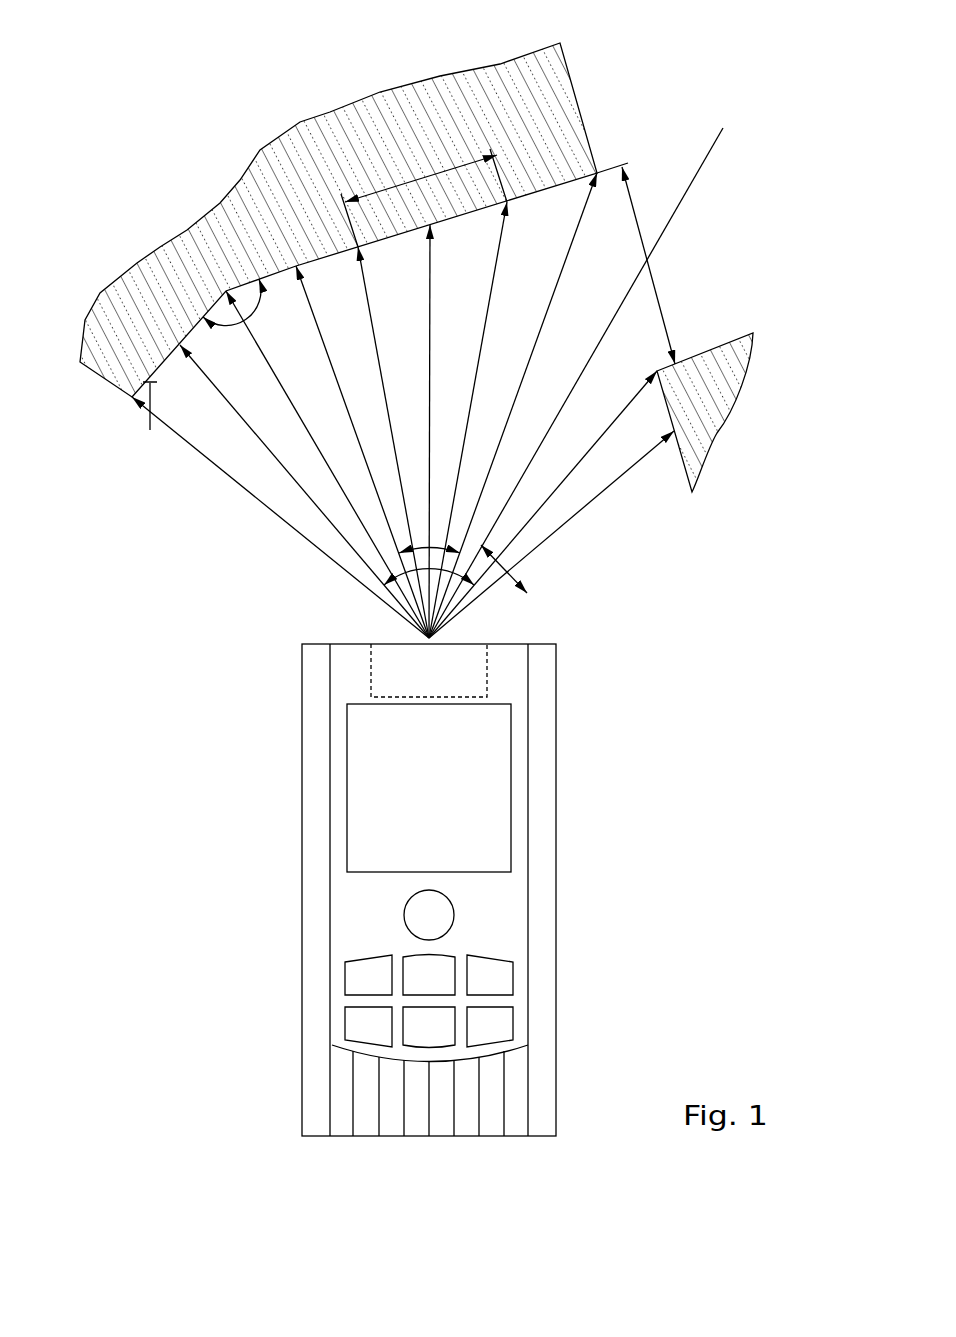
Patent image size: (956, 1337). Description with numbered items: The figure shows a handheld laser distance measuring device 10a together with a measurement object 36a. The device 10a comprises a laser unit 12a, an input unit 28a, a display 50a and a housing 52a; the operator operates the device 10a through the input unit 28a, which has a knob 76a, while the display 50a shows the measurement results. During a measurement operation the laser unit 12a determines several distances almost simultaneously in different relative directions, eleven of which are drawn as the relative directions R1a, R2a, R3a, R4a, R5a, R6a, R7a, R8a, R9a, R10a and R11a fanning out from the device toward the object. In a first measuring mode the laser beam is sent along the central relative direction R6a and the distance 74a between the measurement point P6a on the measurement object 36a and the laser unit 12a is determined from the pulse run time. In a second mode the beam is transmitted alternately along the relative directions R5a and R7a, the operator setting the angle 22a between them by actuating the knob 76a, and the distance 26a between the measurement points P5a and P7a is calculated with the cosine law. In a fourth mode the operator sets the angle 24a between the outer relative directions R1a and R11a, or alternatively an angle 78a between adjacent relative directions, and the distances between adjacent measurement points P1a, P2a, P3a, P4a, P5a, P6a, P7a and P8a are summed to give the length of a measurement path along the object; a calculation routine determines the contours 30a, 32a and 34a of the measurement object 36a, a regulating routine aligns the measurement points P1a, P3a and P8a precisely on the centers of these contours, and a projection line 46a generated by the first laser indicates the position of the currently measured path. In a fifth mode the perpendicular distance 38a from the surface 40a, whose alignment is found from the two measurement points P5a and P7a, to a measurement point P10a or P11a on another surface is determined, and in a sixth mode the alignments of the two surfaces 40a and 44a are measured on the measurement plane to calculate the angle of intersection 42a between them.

The handheld laser distance measuring device 10a is at (588, 662).
The laser unit 12a is at (374, 651).
The angle 22a is at (416, 548).
The angle 24a is at (388, 580).
The distance 26a is at (418, 180).
The input unit 28a is at (520, 1003).
The contour 30a is at (130, 404).
The contour 32a is at (207, 268).
The contour 34a is at (602, 167).
The measurement object 36a is at (546, 74).
The perpendicular distance 38a is at (647, 265).
The surface 40a is at (567, 188).
The angle of intersection 42a is at (208, 320).
The surface 44a is at (153, 422).
The projection line 46a is at (362, 246).
The display 50a is at (495, 772).
The housing 52a is at (517, 810).
The distance 74a is at (432, 332).
The knob 76a is at (443, 918).
The angle 78a is at (513, 566).
The relative direction R1a is at (199, 455).
The relative direction R2a is at (243, 420).
The relative direction R3a is at (281, 387).
The relative direction R4a is at (325, 350).
The relative direction R5a is at (375, 348).
The relative direction R6a is at (428, 338).
The relative direction R7a is at (478, 338).
The relative direction R8a is at (539, 335).
The relative direction R9a is at (601, 340).
The relative direction R10a is at (640, 390).
The relative direction R11a is at (640, 458).
The measurement point P1a is at (131, 394).
The measurement point P2a is at (178, 345).
The measurement point P3a is at (224, 290).
The measurement point P4a is at (294, 267).
The measurement point P5a is at (356, 245).
The measurement point P6a is at (428, 224).
The measurement point P7a is at (506, 201).
The measurement point P8a is at (595, 174).
The measurement point P10a is at (662, 374).
The measurement point P11a is at (677, 427).